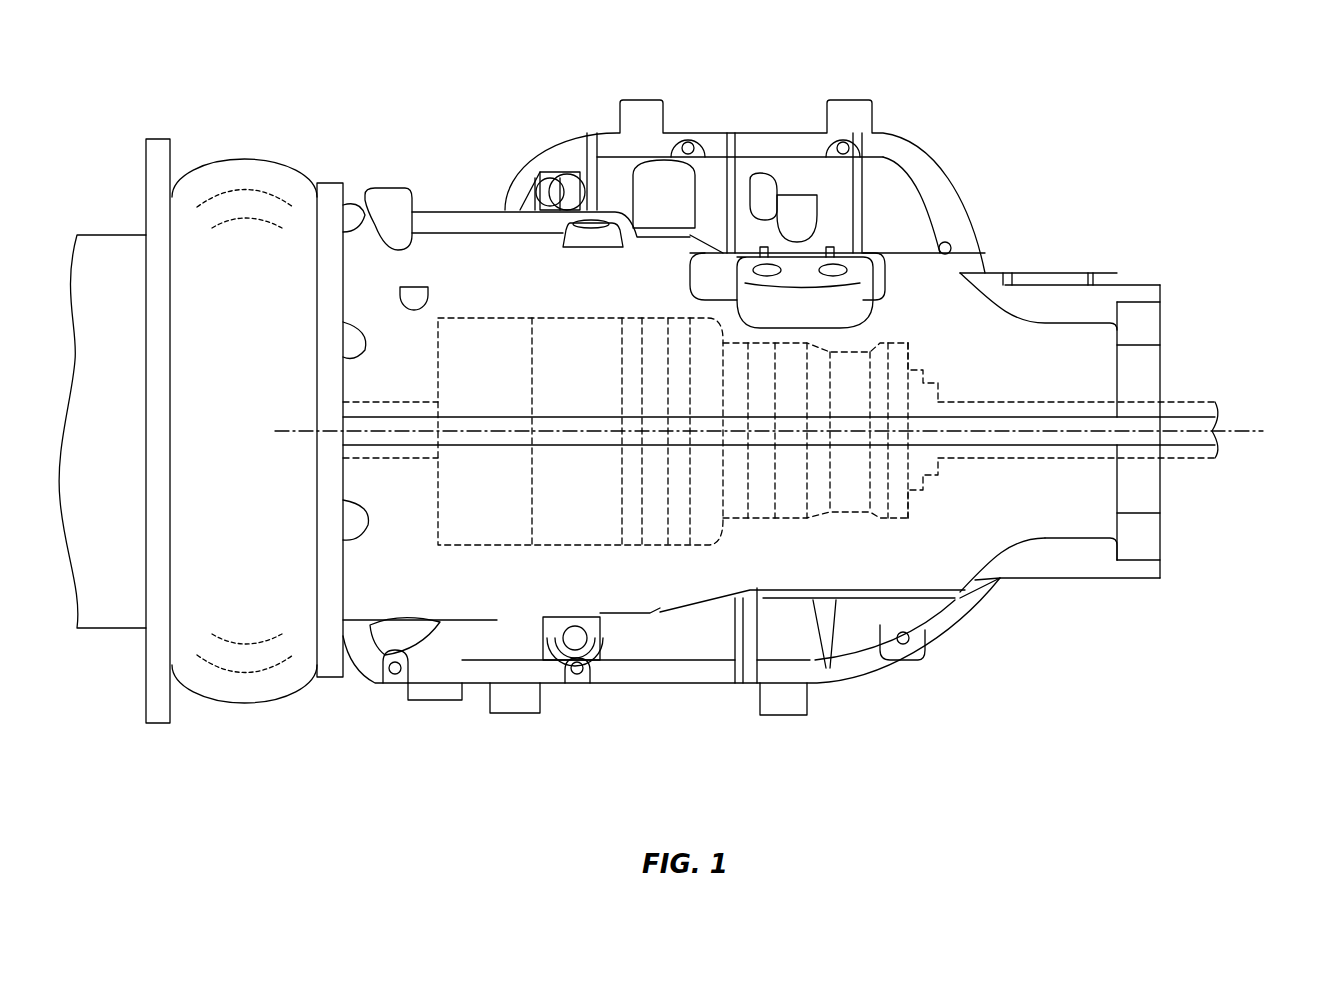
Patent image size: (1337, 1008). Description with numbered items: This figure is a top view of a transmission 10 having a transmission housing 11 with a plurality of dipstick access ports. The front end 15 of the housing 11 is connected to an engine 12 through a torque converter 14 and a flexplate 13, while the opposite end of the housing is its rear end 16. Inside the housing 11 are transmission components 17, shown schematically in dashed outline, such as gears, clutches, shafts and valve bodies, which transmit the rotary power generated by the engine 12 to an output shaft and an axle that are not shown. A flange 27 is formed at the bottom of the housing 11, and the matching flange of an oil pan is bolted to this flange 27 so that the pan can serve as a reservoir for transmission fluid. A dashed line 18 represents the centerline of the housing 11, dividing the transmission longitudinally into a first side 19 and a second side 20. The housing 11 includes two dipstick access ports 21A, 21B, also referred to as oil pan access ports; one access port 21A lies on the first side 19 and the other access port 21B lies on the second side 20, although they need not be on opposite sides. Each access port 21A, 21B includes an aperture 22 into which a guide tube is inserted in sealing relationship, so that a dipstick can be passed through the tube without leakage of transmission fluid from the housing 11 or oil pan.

The transmission 10 is at (1017, 102).
The transmission housing 11 is at (1005, 585).
The engine 12 is at (120, 235).
The flexplate 13 is at (146, 185).
The torque converter 14 is at (255, 157).
The front end 15 is at (330, 183).
The rear end 16 is at (1160, 290).
The transmission components 17 is at (565, 550).
The centerline 18 is at (298, 431).
The first side 19 is at (1100, 610).
The second side 20 is at (1103, 260).
The dipstick access port 21A is at (545, 652).
The dipstick access port 21B is at (562, 170).
The aperture 22 is at (583, 637).
The flange 27 is at (932, 156).